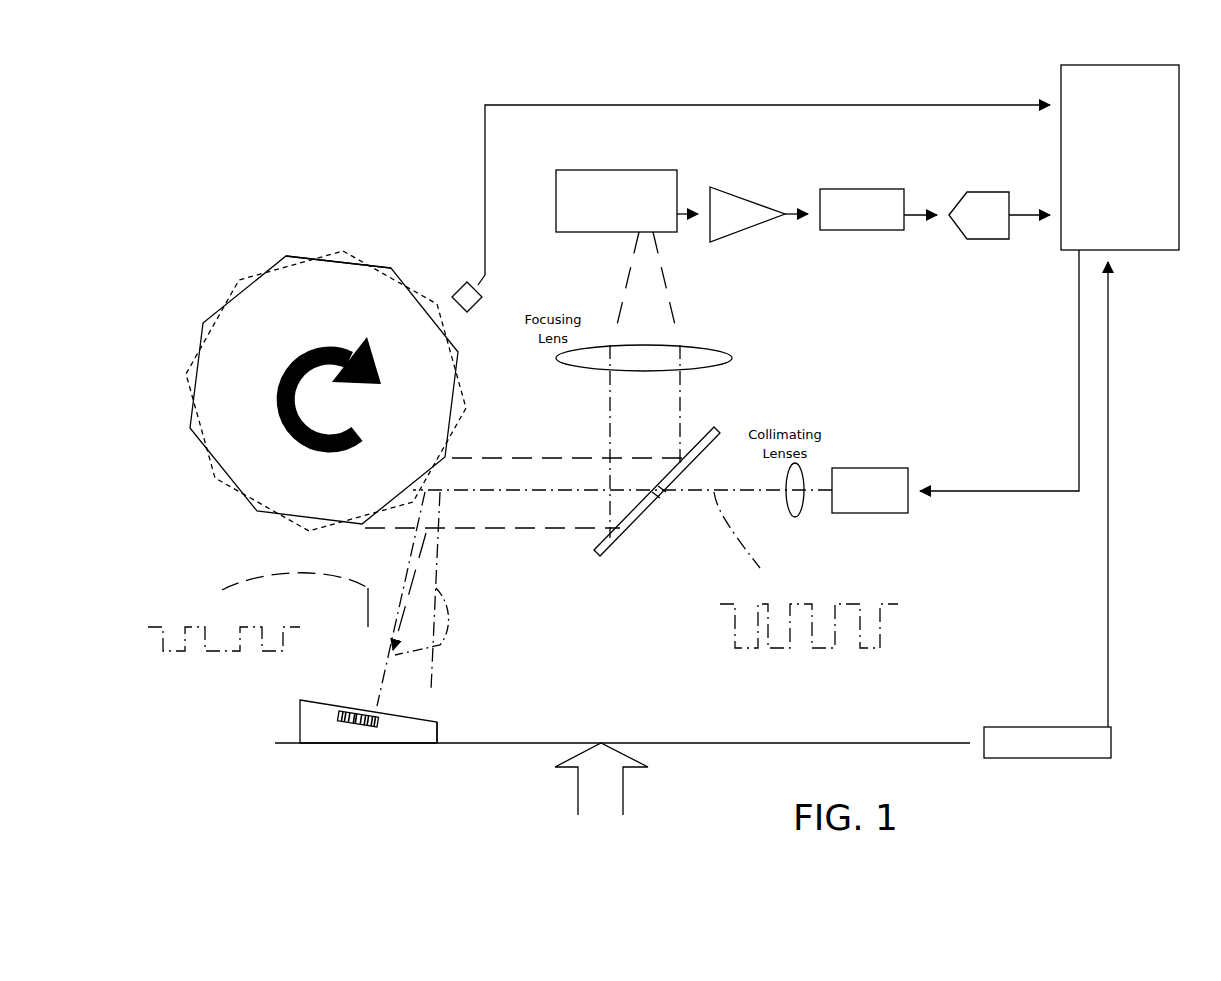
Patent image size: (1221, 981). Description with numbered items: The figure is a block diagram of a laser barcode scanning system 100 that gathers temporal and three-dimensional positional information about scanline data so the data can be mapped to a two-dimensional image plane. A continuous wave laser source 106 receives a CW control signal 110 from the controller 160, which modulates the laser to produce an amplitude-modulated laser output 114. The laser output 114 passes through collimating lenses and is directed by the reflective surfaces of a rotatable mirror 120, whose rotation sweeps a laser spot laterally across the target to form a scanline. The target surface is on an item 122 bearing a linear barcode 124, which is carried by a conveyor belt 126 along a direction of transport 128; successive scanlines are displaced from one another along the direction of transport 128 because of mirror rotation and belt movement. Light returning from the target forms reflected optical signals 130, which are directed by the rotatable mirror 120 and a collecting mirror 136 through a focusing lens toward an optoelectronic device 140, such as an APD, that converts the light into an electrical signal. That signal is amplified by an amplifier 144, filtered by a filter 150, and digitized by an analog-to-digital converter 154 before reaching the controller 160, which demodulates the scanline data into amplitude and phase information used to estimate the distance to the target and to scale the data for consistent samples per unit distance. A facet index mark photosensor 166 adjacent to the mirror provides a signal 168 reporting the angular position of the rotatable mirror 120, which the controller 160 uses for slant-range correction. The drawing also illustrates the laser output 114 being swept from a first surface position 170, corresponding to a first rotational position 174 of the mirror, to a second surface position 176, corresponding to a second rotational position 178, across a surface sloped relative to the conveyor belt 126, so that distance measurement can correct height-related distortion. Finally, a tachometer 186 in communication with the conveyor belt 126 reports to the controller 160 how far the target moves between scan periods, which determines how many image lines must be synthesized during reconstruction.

The laser barcode scanning system 100 is at (225, 82).
The continuous wave laser source 106 is at (866, 468).
The CW control signal 110 is at (1013, 473).
The laser output 114 is at (752, 572).
The rotatable mirror 120 is at (324, 390).
The item 122 is at (300, 708).
The linear barcode 124 is at (353, 707).
The conveyor belt 126 is at (768, 743).
The direction of transport 128 is at (578, 790).
The reflected optical signals 130 is at (232, 586).
The collecting mirror 136 is at (600, 556).
The optoelectronic device 140 is at (636, 170).
The amplifier 144 is at (727, 192).
The filter 150 is at (865, 189).
The analog-to-digital converter 154 is at (985, 192).
The controller 160 is at (1179, 132).
The facet index mark photosensor 166 is at (462, 284).
The signal 168 is at (816, 82).
The first surface position 170 is at (437, 722).
The first rotational position 174 is at (240, 276).
The second surface position 176 is at (373, 702).
The second rotational position 178 is at (286, 255).
The tachometer 186 is at (1004, 727).